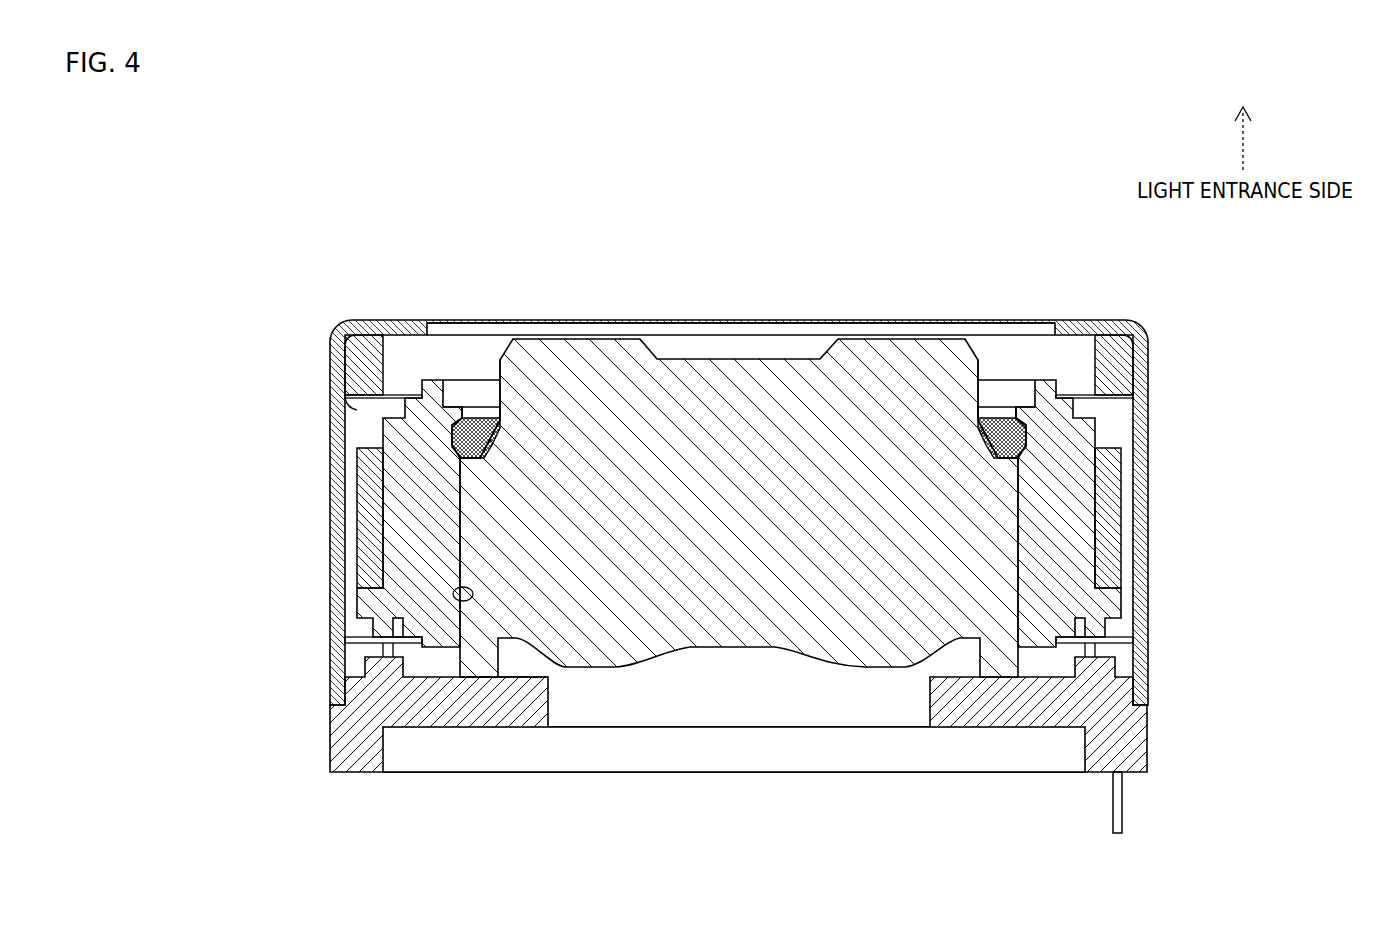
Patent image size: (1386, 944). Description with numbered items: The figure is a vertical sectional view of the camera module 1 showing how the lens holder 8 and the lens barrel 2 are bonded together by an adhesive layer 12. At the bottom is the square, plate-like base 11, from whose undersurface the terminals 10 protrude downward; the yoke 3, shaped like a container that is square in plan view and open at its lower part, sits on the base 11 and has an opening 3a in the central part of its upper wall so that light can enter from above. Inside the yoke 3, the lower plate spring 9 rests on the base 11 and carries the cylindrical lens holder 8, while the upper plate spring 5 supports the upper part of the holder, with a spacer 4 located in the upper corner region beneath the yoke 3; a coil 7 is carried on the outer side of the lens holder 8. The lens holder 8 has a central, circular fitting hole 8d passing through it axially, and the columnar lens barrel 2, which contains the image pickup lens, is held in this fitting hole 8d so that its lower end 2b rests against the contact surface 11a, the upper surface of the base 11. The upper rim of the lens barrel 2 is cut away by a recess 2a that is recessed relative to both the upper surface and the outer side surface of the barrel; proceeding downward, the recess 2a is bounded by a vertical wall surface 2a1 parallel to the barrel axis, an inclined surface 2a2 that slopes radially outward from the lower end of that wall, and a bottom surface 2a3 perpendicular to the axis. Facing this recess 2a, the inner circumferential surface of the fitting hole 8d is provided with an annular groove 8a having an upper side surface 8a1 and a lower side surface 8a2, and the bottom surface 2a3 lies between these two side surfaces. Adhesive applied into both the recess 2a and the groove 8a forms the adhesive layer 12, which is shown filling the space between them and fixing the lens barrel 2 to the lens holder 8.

The camera module 1 is at (1089, 172).
The lens barrel 2 is at (850, 346).
The recess 2a is at (462, 432).
The vertical wall surface 2a1 is at (497, 398).
The inclined surface 2a2 is at (482, 440).
The bottom surface 2a3 is at (470, 458).
The lower end 2b is at (466, 678).
The yoke 3 is at (1097, 322).
The opening 3a is at (430, 321).
The spacer 4 is at (1112, 346).
The upper plate spring 5 is at (382, 397).
The coil 7 is at (1110, 580).
The lens holder 8 is at (1062, 535).
The groove 8a is at (1026, 440).
The upper side surface 8a1 is at (462, 426).
The lower side surface 8a2 is at (460, 470).
The fitting hole 8d is at (453, 594).
The lower plate spring 9 is at (350, 640).
The terminals 10 is at (1123, 814).
The base 11 is at (1136, 738).
The contact surface 11a is at (492, 678).
The adhesive layer 12 is at (476, 435).